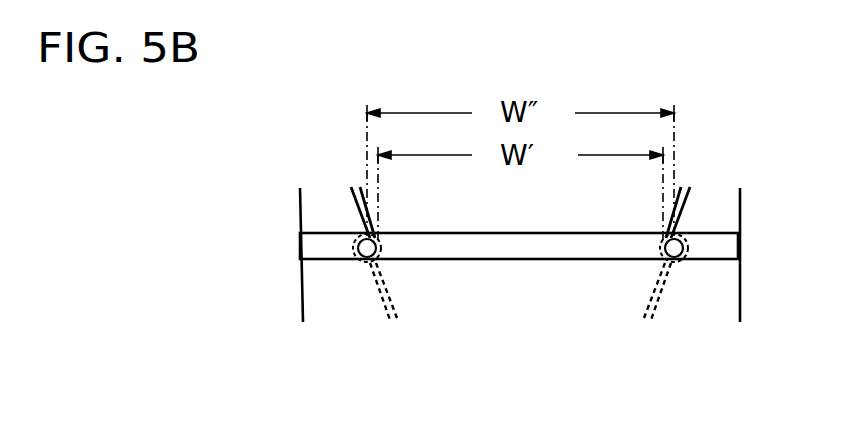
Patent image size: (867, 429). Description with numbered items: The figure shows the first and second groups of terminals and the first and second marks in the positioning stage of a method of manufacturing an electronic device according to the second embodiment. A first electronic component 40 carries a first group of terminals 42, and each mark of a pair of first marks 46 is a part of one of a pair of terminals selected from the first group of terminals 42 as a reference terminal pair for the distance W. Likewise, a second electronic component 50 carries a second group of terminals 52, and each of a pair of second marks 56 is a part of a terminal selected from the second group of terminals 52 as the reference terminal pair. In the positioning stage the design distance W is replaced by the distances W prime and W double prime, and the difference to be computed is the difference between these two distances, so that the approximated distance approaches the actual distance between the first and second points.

The first electronic component 40 is at (730, 208).
The first group of terminals 42 is at (697, 209).
The first marks 46 is at (380, 248).
The second electronic component 50 is at (723, 279).
The second group of terminals 52 is at (688, 292).
The second marks 56 is at (355, 262).